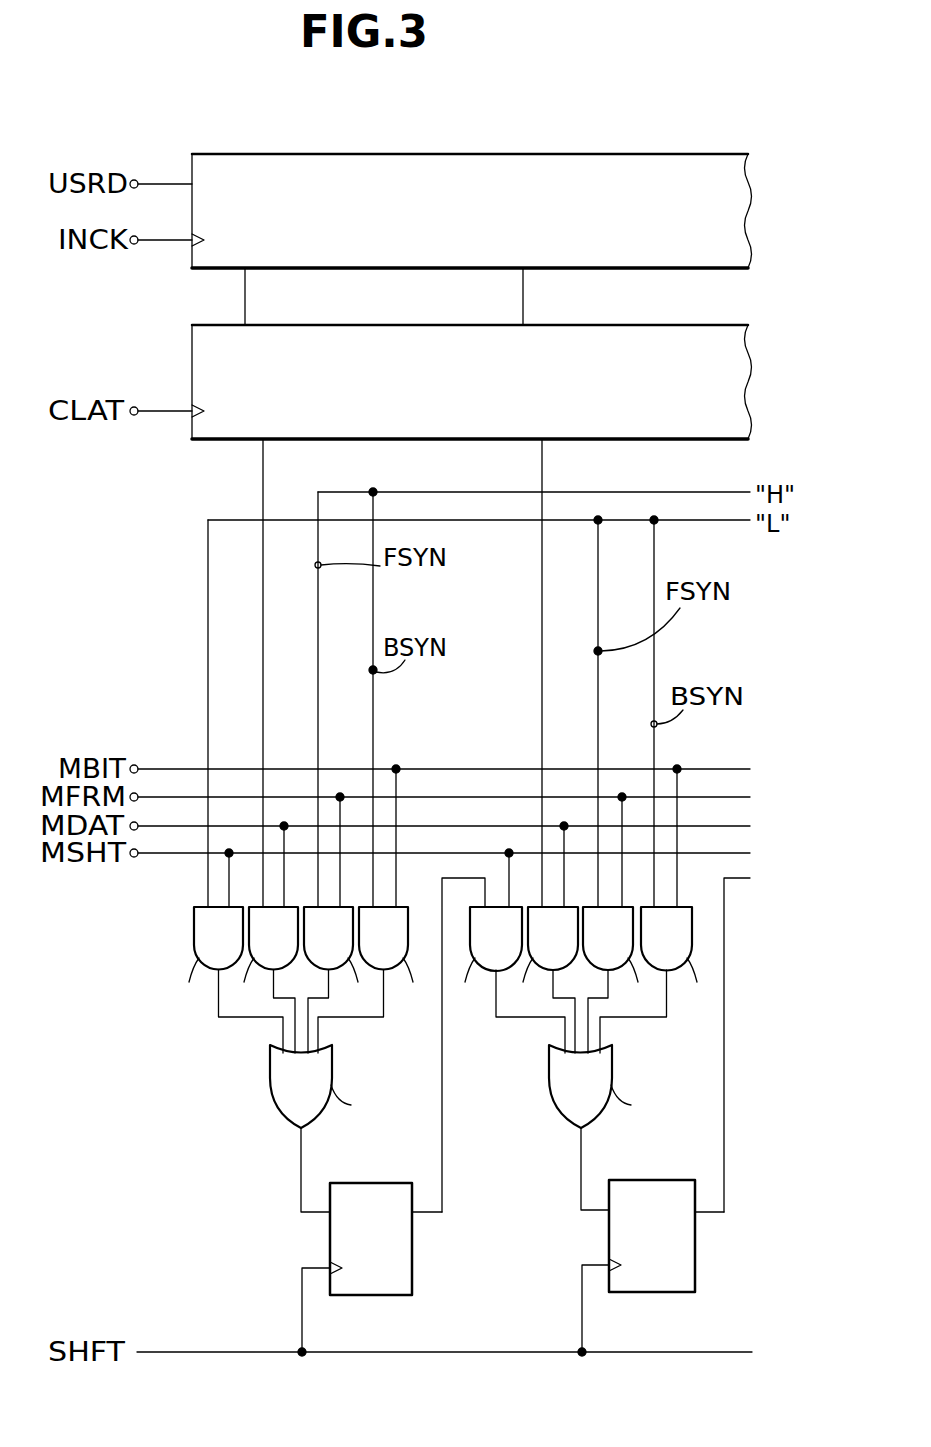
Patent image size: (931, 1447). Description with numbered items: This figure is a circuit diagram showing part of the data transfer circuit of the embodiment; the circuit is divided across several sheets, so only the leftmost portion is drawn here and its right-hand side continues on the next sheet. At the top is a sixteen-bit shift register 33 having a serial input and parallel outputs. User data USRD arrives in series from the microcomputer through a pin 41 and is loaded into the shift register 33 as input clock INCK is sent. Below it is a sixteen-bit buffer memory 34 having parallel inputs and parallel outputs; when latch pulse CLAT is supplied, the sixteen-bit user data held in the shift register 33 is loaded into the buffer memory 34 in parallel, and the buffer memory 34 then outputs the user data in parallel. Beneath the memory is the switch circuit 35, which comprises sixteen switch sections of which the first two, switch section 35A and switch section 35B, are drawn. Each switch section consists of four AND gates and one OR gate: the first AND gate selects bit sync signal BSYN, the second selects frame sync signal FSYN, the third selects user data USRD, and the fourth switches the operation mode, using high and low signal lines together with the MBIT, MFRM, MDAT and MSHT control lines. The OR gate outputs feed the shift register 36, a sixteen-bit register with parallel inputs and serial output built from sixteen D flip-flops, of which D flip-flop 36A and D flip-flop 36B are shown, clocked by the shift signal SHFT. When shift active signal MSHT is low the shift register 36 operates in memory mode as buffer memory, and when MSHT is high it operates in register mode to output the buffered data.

The pin 41 is at (134, 180).
The shift register 33 is at (660, 270).
The buffer memory 34 is at (665, 441).
The switch circuit 35 is at (371, 1059).
The switch section 35A is at (232, 1083).
The switch section 35B is at (521, 1085).
The shift register 36 is at (471, 1266).
The D flip-flop 36A is at (413, 1255).
The D flip-flop 36B is at (696, 1253).